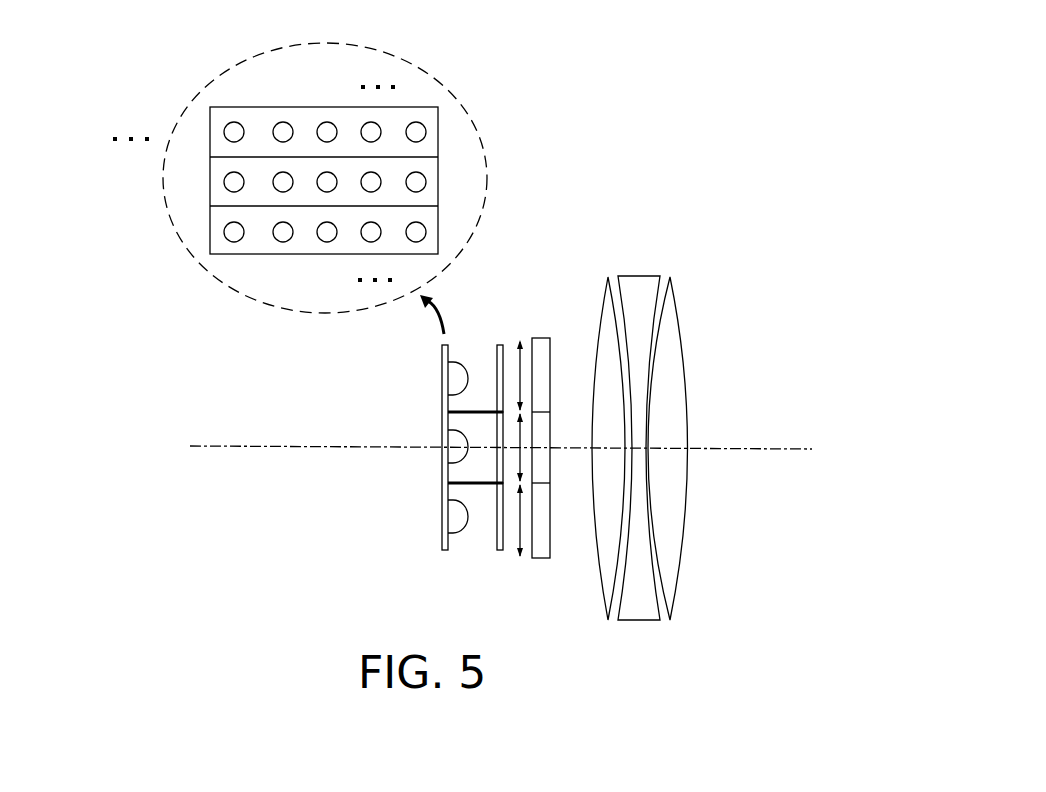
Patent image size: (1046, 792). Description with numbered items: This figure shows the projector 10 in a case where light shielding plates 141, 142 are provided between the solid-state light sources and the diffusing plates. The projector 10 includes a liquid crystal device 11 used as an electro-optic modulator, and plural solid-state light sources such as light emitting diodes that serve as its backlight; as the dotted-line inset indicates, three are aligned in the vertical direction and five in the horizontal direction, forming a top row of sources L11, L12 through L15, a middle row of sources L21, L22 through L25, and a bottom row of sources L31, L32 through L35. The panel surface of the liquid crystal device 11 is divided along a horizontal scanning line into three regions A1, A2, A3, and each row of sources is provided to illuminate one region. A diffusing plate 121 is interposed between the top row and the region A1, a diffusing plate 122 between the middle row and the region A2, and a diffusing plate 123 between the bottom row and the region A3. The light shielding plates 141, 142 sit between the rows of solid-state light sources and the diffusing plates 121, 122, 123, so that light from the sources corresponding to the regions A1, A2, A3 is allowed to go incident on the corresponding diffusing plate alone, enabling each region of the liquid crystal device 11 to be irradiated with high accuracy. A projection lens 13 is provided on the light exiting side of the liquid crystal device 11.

The solid-state light source L11 is at (236, 123).
The solid-state light source L12 is at (287, 122).
The solid-state light source L15 is at (418, 122).
The solid-state light source L21 is at (232, 182).
The solid-state light source L22 is at (276, 176).
The solid-state light source L25 is at (426, 182).
The solid-state light source L31 is at (234, 232).
The solid-state light source L32 is at (283, 230).
The solid-state light source L35 is at (416, 232).
The projector 10 is at (661, 426).
The liquid crystal device 11 is at (548, 338).
The projection lens 13 is at (675, 266).
The diffusing plate 121 is at (501, 346).
The diffusing plate 122 is at (501, 463).
The diffusing plate 123 is at (500, 552).
The light shielding plate 141 is at (478, 410).
The light shielding plate 142 is at (477, 487).
The region A1 is at (518, 375).
The region A2 is at (518, 447).
The region A3 is at (518, 520).